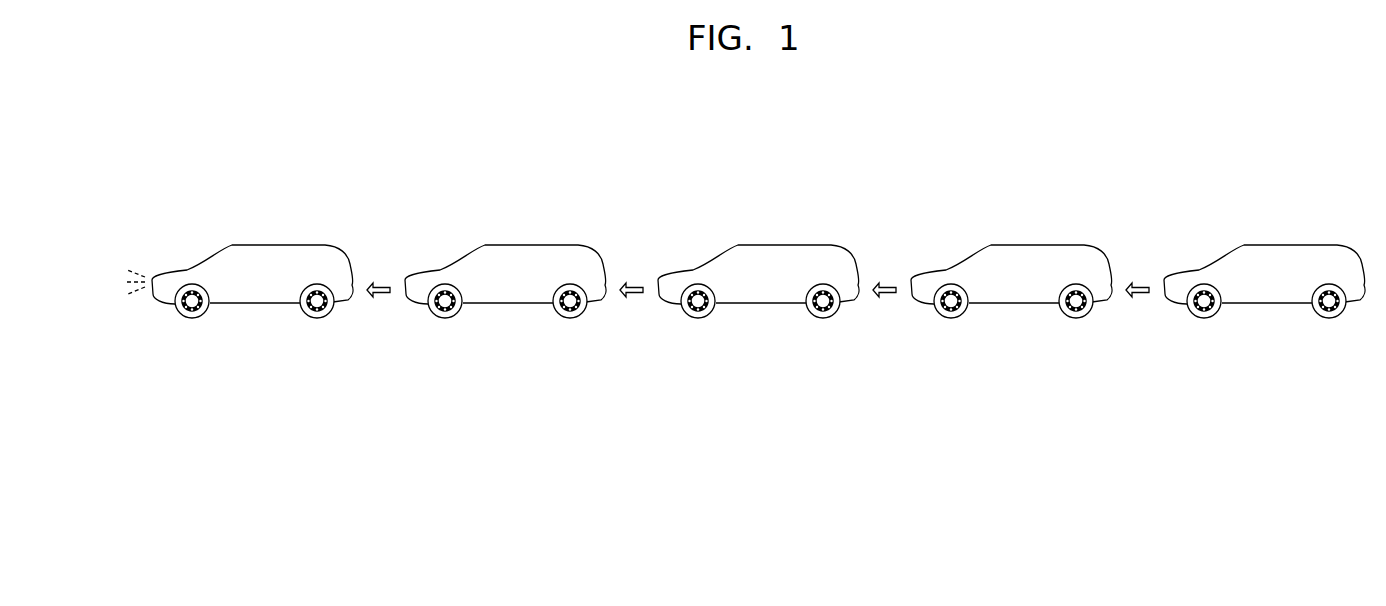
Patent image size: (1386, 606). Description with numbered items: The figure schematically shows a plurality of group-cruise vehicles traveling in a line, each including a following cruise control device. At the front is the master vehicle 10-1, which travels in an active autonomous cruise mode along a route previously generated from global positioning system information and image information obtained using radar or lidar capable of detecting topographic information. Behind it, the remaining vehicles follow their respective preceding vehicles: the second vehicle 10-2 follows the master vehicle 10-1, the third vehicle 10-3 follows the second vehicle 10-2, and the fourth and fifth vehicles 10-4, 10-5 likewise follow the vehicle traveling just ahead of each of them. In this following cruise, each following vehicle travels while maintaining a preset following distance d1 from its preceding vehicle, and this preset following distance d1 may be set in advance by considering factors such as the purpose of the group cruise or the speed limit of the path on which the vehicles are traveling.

The master vehicle 10-1 is at (273, 246).
The second vehicle 10-2 is at (526, 246).
The third vehicle 10-3 is at (779, 246).
The fourth vehicle 10-4 is at (1032, 246).
The fifth vehicle 10-5 is at (1285, 246).
The preset following distance d1 is at (353, 308).